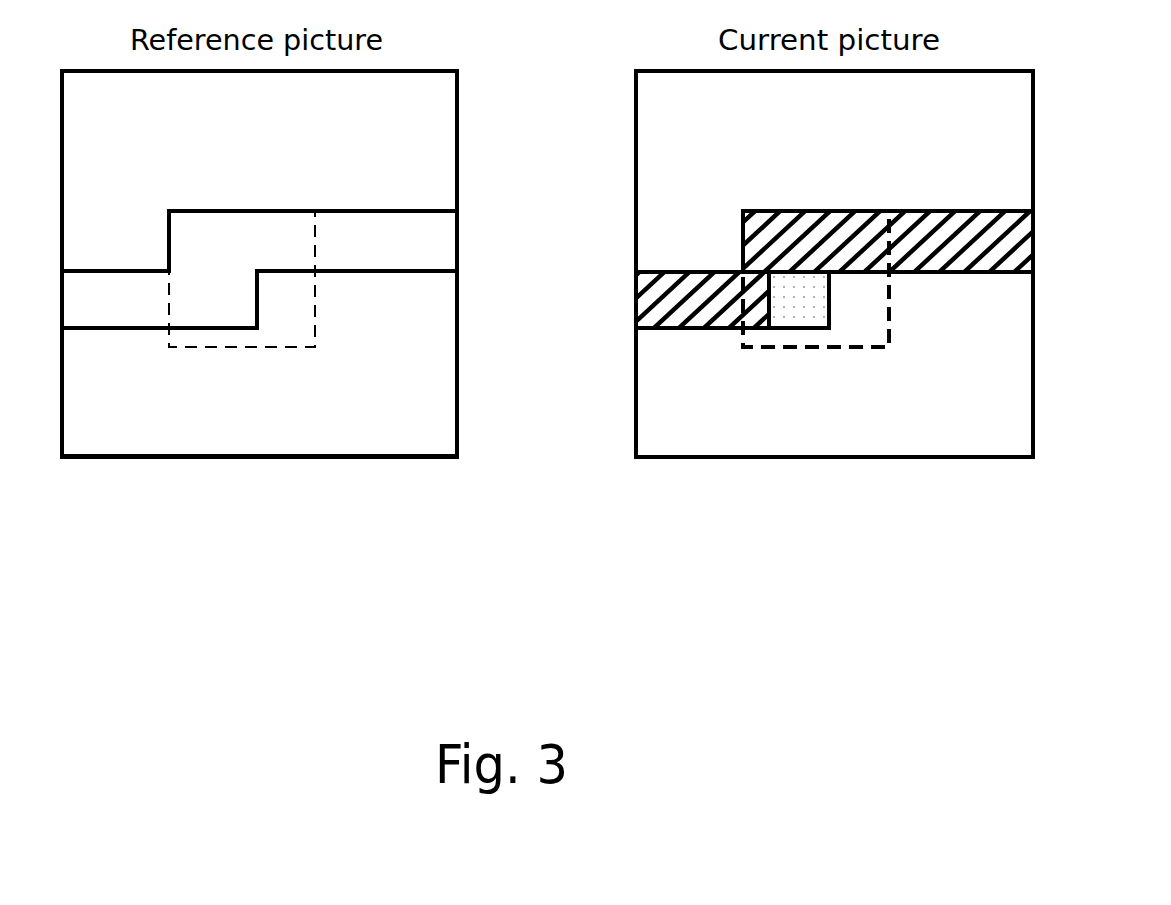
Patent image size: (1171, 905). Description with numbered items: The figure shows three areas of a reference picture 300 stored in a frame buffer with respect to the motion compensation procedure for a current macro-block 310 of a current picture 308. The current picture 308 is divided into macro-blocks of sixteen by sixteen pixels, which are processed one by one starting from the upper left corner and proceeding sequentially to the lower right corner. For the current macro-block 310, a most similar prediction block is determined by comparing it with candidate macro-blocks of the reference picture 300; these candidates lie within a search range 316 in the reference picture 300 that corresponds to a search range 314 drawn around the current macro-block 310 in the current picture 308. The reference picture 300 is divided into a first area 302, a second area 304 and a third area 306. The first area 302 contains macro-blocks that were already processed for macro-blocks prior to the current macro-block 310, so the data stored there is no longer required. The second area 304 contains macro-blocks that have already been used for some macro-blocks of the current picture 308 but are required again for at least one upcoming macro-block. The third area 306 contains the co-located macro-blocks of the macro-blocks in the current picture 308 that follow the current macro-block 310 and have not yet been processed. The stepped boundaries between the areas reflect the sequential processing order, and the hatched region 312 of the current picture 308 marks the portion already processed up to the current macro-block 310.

The reference picture 300 is at (459, 360).
The first area 302 is at (141, 190).
The second area 304 is at (141, 318).
The third area 306 is at (141, 412).
The current picture 308 is at (1034, 360).
The current macro-block 310 is at (817, 300).
The reconstructed region of current picture 312 is at (920, 215).
The search range 314 is at (815, 347).
The search range 316 is at (316, 318).